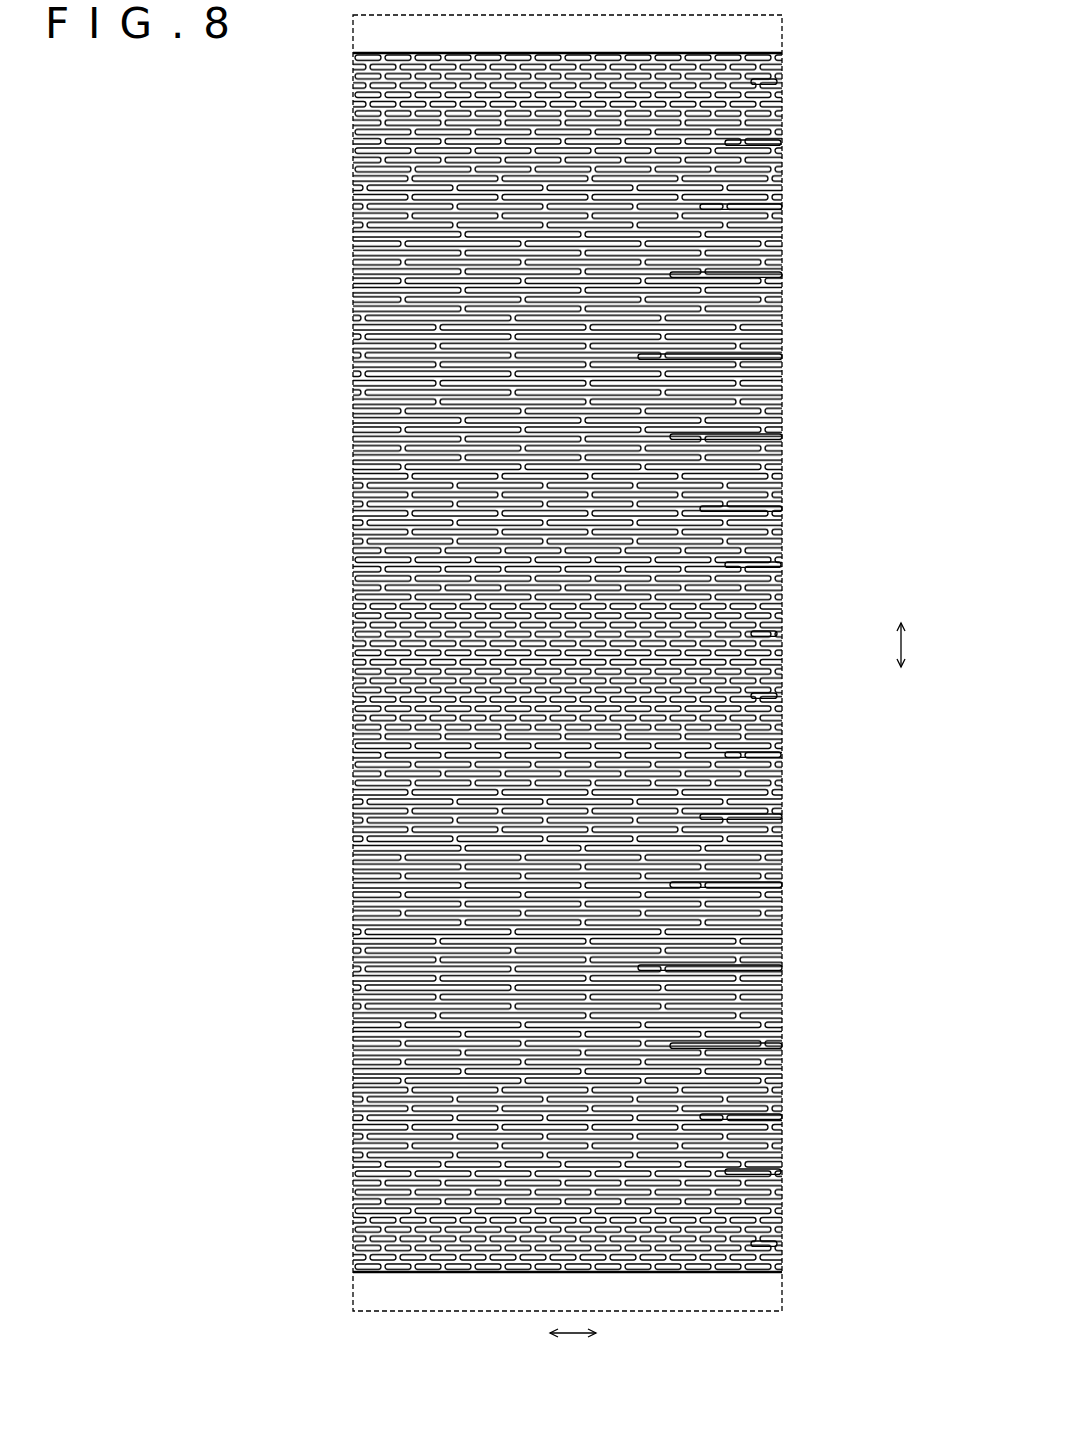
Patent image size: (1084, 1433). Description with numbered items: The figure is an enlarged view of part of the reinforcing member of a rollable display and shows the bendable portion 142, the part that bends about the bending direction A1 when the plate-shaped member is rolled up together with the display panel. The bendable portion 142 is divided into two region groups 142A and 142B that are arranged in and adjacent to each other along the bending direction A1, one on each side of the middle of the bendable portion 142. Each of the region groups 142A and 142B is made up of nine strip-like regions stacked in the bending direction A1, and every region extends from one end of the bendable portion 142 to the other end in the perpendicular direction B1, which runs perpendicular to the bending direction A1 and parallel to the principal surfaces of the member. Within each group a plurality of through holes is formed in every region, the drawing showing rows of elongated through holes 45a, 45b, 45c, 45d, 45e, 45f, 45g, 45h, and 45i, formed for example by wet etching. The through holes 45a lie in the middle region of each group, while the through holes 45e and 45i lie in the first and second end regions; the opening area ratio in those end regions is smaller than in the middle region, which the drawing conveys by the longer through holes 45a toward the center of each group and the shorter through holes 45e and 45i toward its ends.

The bendable portion 142 is at (788, 604).
The region group 142A is at (279, 676).
The region group 142B is at (279, 62).
The through holes 45a is at (700, 362).
The through holes 45b is at (705, 441).
The through holes 45c is at (712, 511).
The through holes 45d is at (722, 566).
The through holes 45e is at (715, 637).
The through holes 45f is at (705, 278).
The through holes 45g is at (712, 210).
The through holes 45h is at (722, 146).
The through holes 45i is at (740, 85).
The bending direction A1 is at (904, 647).
The perpendicular direction B1 is at (573, 1336).